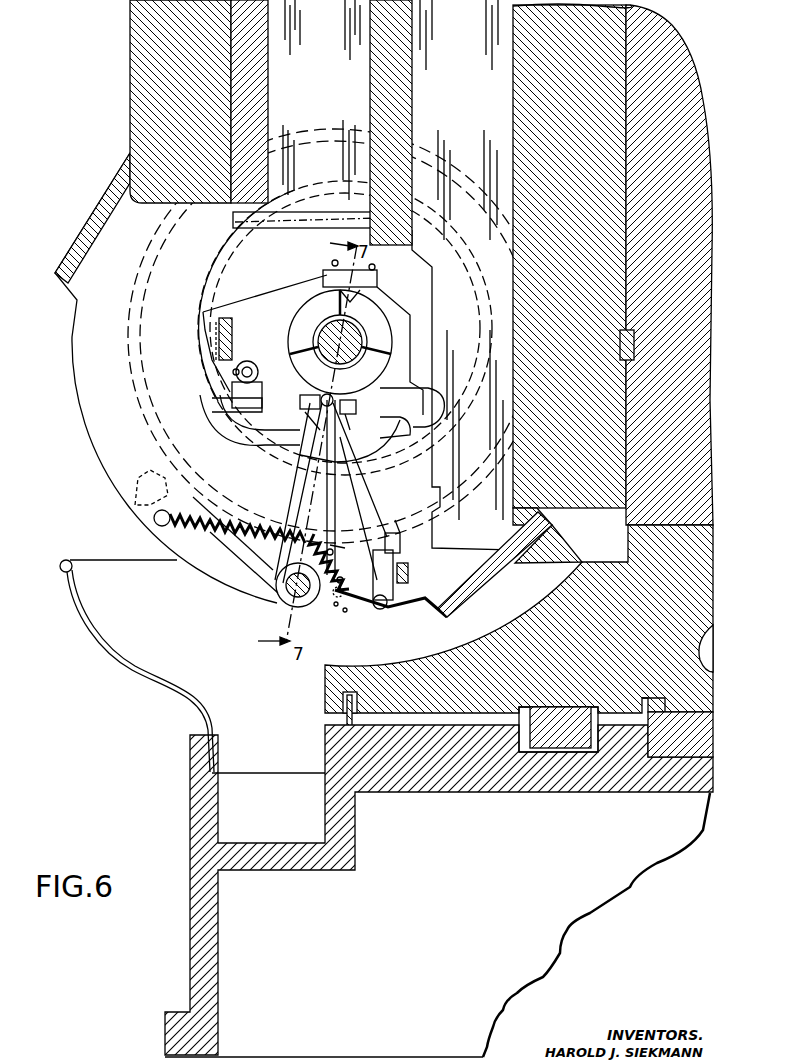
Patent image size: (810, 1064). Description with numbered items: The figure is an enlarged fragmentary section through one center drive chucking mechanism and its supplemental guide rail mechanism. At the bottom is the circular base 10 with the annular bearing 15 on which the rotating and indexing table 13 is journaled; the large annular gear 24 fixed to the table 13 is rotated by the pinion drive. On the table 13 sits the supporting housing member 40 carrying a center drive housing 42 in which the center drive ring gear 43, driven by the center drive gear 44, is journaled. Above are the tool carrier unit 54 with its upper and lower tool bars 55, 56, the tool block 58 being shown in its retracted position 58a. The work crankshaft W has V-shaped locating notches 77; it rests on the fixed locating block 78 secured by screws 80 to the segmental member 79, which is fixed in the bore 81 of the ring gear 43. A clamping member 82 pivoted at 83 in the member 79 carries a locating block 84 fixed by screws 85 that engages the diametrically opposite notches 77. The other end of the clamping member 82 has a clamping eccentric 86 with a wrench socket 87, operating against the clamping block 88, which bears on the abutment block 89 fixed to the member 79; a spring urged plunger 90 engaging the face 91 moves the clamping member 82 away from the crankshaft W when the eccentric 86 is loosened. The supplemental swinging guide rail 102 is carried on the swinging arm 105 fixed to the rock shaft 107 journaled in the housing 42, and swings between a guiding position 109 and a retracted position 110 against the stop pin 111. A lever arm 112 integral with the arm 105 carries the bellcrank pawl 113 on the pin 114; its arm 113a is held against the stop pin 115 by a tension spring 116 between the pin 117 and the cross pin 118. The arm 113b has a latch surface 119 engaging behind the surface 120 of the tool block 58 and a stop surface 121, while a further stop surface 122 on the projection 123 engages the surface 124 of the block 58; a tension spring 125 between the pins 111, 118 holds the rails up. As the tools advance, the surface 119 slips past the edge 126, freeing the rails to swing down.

The circular base 10 is at (195, 973).
The rotating and indexing table 13 is at (519, 626).
The annular bearing 15 is at (680, 712).
The large annular gear 24 is at (558, 755).
The supporting housing member 40 is at (678, 97).
The center drive housing 42 is at (78, 249).
The center drive ring gear 43 is at (125, 352).
The center drive gear 44 is at (533, 283).
The tool carrier unit 54 is at (130, 42).
The upper tool bar 55 is at (321, 100).
The lower tool bar 56 is at (461, 260).
The tool block 58 is at (434, 490).
The retracted position of tool block 58a is at (467, 553).
The V-shaped locating notches 77 is at (340, 318).
The fixed locating block 78 is at (343, 262).
The segmental member 79 is at (345, 328).
The screws 80 is at (332, 265).
The bore 81 is at (212, 292).
The clamping member 82 is at (280, 450).
The pivot 83 is at (444, 418).
The locating block 84 is at (322, 392).
The screws 85 is at (305, 410).
The clamping eccentric 86 is at (258, 358).
The wrench socket 87 is at (234, 372).
The clamping block 88 is at (262, 395).
The abutment block 89 is at (212, 400).
The spring urged plunger 90 is at (232, 318).
The face 91 is at (218, 332).
The work crankshaft W is at (290, 328).
The supplemental swinging guide rail 102 is at (310, 420).
The swinging arm 105 is at (328, 512).
The rock shaft 107 is at (278, 600).
The swung-up position 109 is at (296, 492).
The retracted position 110 is at (222, 587).
The stop pin 111 is at (154, 523).
The lever arm 112 is at (333, 600).
The bellcrank pawl 113 is at (402, 608).
The arm of pawl 113a is at (345, 613).
The arm of bellcrank 113b is at (393, 590).
The pin 114 is at (380, 610).
The stop pin 115 is at (343, 580).
The tension spring 116 is at (330, 545).
The pin 117 is at (336, 608).
The cross pin 118 is at (305, 525).
The latch surface 119 is at (404, 538).
The surface 120 is at (408, 575).
The stop surface 121 is at (396, 512).
The stop surface 122 is at (350, 432).
The projection 123 is at (350, 441).
The surface 124 is at (347, 487).
The tension spring 125 is at (222, 535).
The edge 126 is at (333, 552).